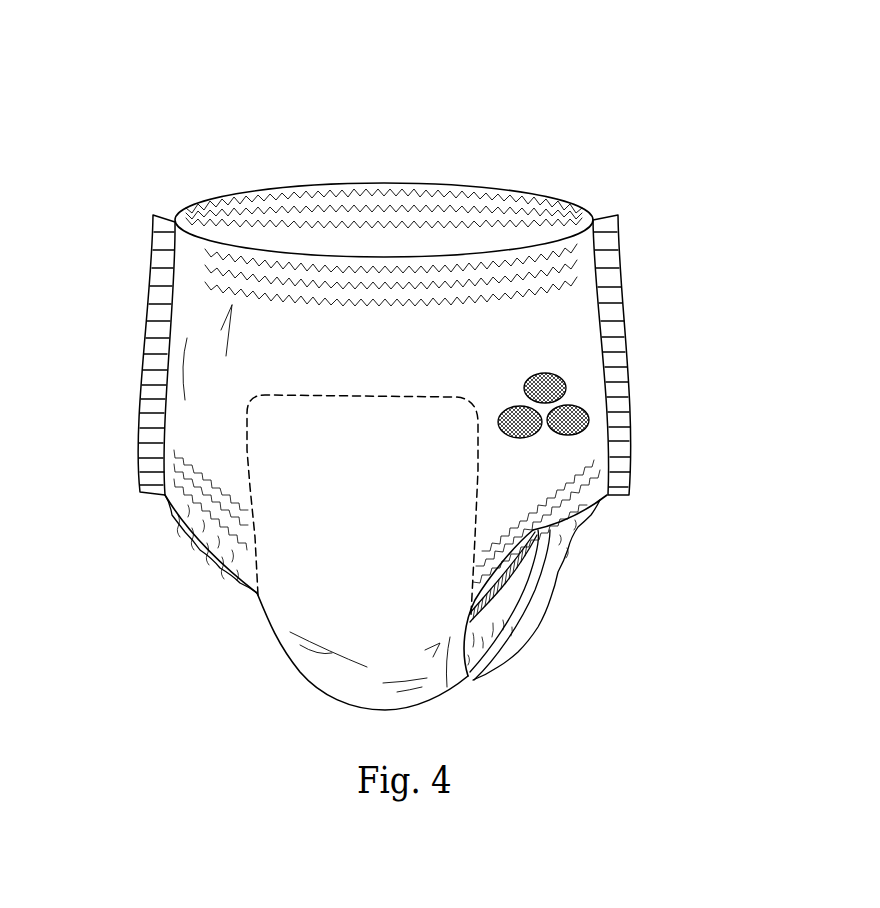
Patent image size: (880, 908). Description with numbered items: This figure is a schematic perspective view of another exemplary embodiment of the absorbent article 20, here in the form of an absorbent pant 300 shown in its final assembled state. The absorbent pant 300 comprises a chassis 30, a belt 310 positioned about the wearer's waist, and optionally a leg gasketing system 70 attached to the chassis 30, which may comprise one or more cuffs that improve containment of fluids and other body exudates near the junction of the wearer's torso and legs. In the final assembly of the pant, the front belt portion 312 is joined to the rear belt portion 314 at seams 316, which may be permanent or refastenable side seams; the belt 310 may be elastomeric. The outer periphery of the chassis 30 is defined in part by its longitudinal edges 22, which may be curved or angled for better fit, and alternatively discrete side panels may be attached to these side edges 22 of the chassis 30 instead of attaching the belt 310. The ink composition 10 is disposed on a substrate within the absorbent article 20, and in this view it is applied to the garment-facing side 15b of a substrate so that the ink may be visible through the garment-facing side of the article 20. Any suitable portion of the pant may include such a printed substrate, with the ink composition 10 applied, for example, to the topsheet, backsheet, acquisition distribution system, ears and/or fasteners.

The absorbent article 20 is at (570, 128).
The absorbent pant 300 is at (628, 151).
The belt 310 is at (210, 303).
The front belt portion 312 is at (407, 267).
The rear belt portion 314 is at (423, 237).
The seams 316 is at (156, 312).
The garment-facing side of a substrate 15b is at (493, 366).
The ink composition 10 is at (543, 408).
The longitudinal edges 22 is at (248, 452).
The chassis 30 is at (275, 618).
The leg gasketing system 70 is at (503, 623).